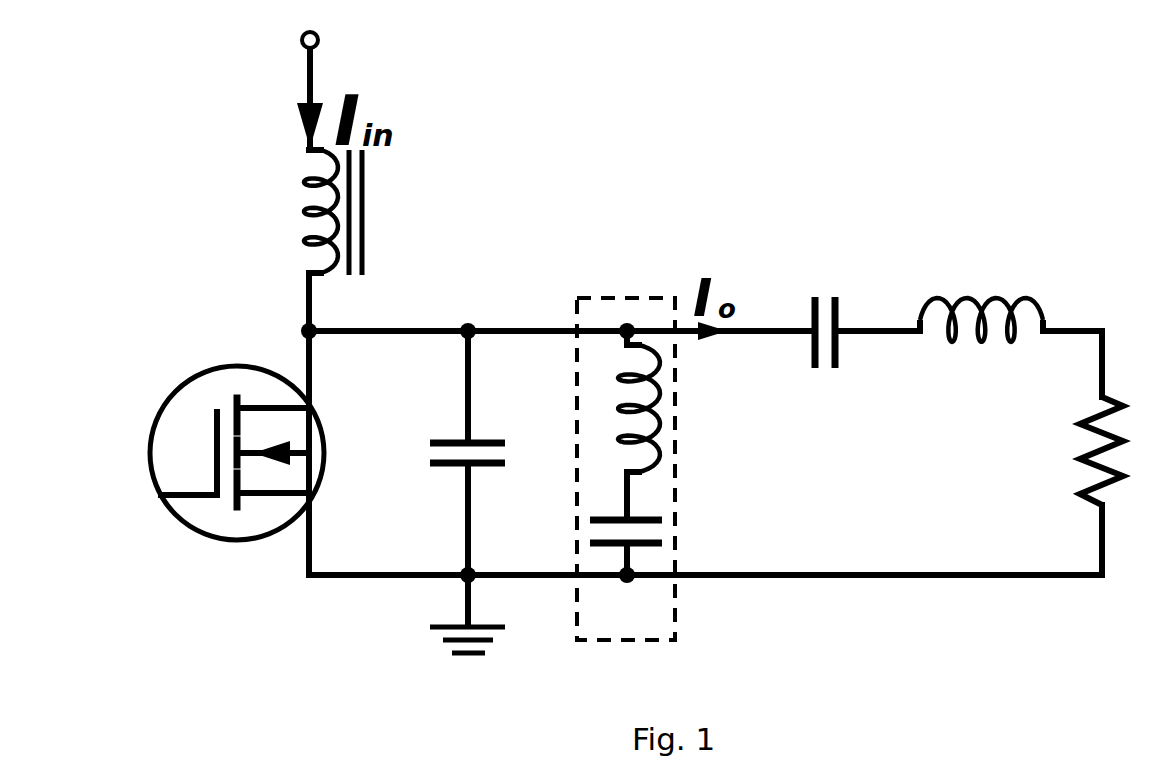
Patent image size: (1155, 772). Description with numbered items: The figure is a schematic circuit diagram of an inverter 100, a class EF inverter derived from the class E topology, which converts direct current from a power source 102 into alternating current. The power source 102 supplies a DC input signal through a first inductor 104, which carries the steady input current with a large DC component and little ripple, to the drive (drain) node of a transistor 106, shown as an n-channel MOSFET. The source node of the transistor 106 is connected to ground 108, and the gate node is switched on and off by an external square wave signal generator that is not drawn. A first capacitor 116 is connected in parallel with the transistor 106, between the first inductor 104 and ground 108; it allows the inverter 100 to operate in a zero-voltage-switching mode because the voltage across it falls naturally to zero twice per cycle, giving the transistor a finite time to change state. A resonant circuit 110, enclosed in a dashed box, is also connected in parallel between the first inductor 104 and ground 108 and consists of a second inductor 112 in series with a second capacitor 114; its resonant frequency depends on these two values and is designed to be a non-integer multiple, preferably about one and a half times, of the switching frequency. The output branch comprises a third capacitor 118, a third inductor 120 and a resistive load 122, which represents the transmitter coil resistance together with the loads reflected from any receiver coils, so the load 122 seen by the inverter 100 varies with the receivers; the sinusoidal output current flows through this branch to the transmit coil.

The inverter 100 is at (638, 101).
The power source 102 is at (303, 42).
The first inductor 104 is at (302, 213).
The transistor 106 is at (153, 433).
The ground 108 is at (463, 668).
The resonant circuit 110 is at (682, 635).
The second inductor 112 is at (652, 397).
The second capacitor 114 is at (660, 520).
The first capacitor 116 is at (435, 467).
The third capacitor 118 is at (832, 297).
The third inductor 120 is at (962, 300).
The resistive load 122 is at (1083, 462).